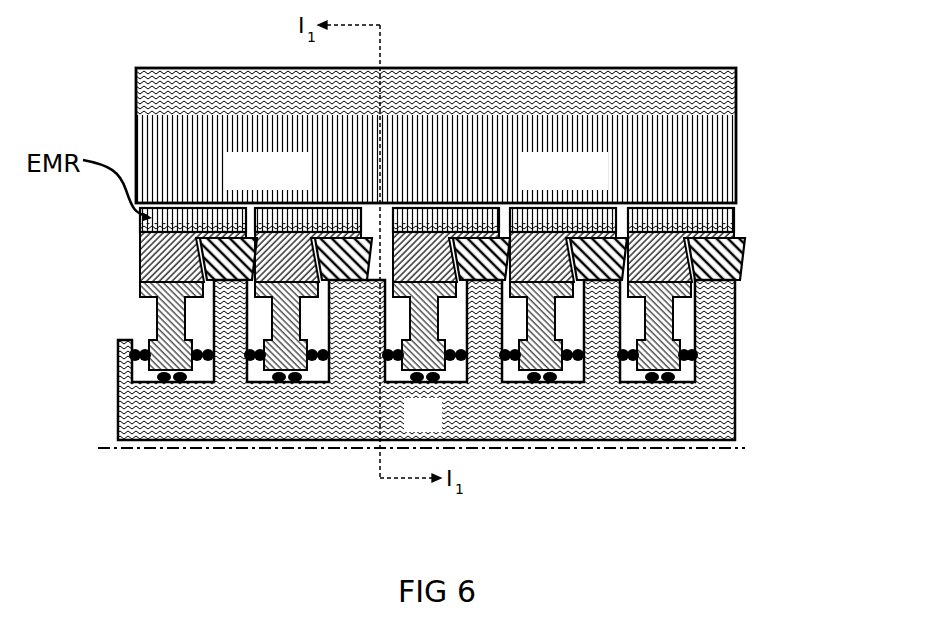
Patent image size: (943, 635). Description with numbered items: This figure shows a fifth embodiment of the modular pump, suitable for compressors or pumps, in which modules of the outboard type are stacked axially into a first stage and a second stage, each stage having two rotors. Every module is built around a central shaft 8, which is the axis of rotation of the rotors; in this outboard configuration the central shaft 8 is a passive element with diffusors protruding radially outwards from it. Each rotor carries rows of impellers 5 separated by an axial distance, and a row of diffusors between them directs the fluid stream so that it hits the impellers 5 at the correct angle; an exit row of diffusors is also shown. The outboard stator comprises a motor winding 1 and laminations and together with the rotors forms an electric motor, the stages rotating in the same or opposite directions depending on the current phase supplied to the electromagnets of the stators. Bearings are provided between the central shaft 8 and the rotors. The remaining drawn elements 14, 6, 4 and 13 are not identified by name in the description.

The motor winding 1 is at (714, 157).
The electromagnetic reactor strip 14 is at (736, 203).
The impellers 5 is at (143, 262).
The wedge 6 is at (718, 255).
The central shaft 8 is at (426, 360).
The bearing balls 4 is at (697, 347).
The axis of rotation 13 is at (665, 447).